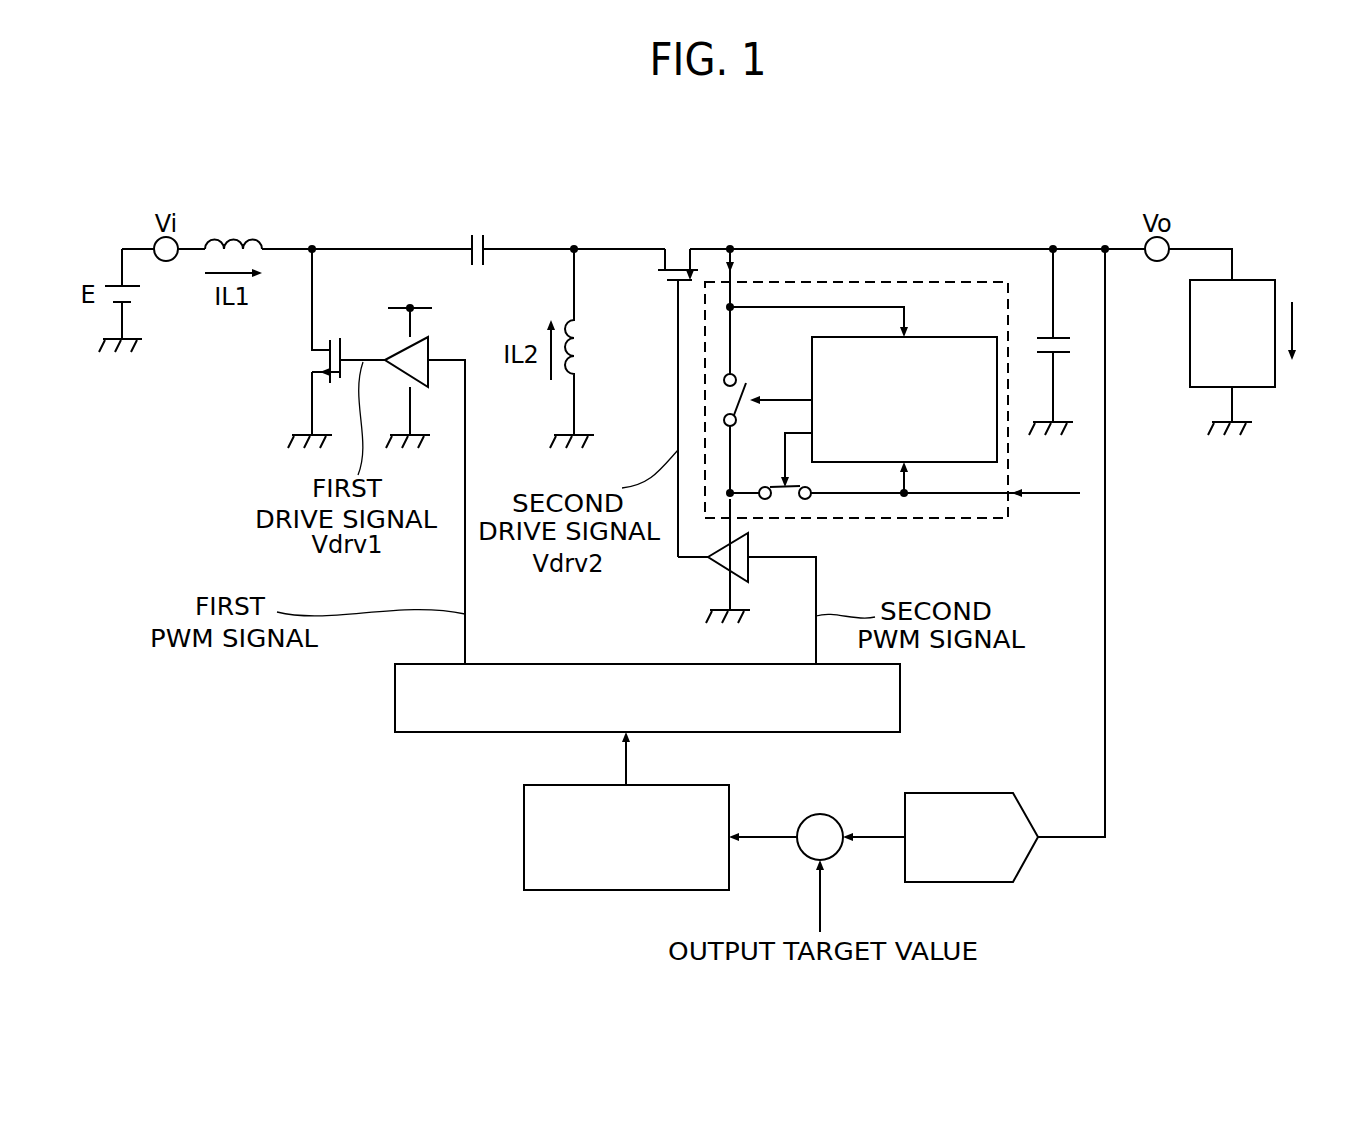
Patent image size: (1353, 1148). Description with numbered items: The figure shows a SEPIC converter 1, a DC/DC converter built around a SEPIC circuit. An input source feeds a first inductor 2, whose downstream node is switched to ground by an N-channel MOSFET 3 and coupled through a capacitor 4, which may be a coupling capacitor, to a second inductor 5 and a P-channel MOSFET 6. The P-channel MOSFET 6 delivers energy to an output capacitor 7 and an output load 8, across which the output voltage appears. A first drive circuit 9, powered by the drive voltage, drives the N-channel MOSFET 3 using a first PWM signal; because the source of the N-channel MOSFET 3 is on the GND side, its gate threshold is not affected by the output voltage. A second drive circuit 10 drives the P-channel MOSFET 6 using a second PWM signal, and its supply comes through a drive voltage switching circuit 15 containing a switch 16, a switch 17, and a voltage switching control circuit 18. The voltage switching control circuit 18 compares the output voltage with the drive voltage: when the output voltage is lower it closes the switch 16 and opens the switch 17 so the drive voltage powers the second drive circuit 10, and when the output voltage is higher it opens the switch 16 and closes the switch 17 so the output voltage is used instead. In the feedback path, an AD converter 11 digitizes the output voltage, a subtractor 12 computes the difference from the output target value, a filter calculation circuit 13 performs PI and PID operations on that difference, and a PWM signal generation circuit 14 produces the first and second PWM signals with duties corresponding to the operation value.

The SEPIC converter 1 is at (784, 156).
The first inductor 2 is at (233, 235).
The N-channel MOSFET 3 is at (313, 360).
The capacitor 4 is at (477, 232).
The second inductor 5 is at (572, 373).
The P-channel MOSFET 6 is at (678, 252).
The output capacitor 7 is at (1063, 338).
The output load 8 is at (1253, 280).
The first drive circuit 9 is at (400, 352).
The second drive circuit 10 is at (720, 567).
The AD converter 11 is at (988, 793).
The subtractor 12 is at (828, 813).
The filter calculation circuit 13 is at (553, 890).
The PWM signal generation circuit 14 is at (393, 703).
The drive voltage switching circuit 15 is at (987, 522).
The switch 16 is at (807, 498).
The switch 17 is at (748, 412).
The voltage switching control circuit 18 is at (943, 337).